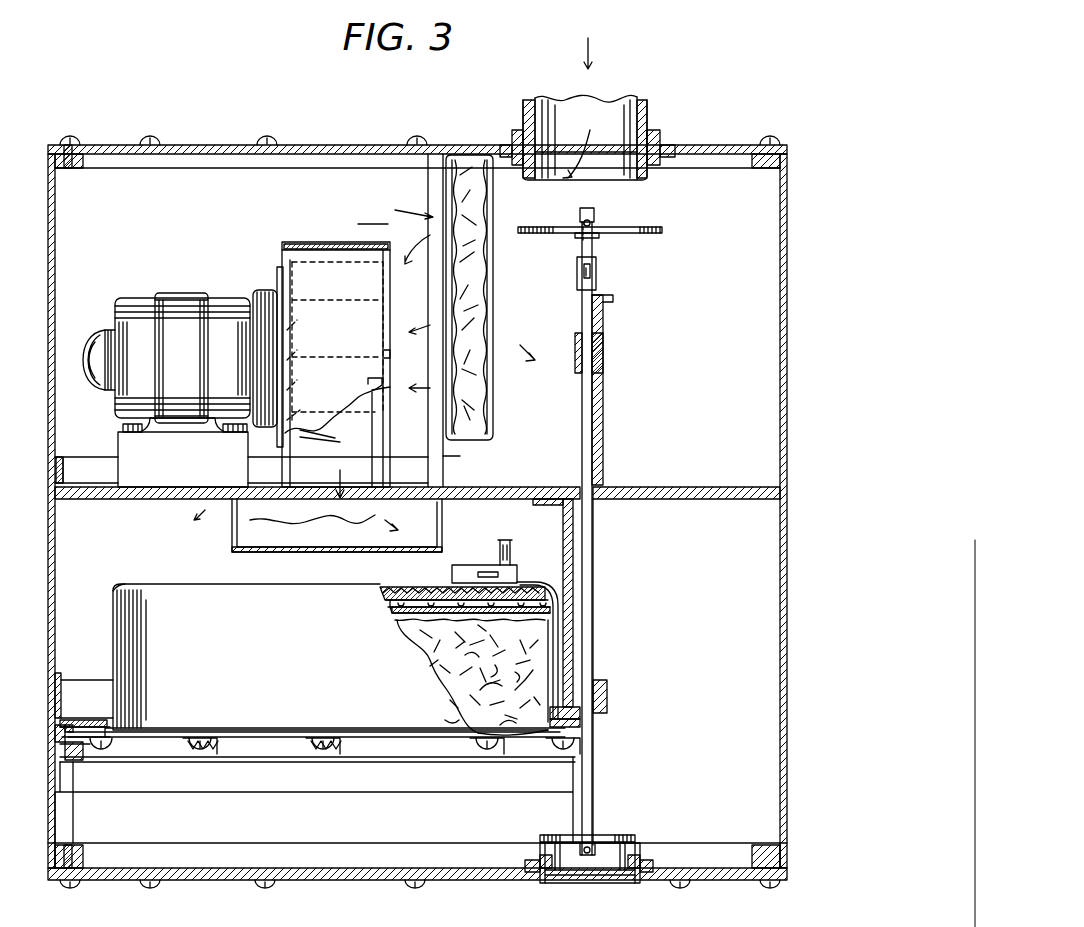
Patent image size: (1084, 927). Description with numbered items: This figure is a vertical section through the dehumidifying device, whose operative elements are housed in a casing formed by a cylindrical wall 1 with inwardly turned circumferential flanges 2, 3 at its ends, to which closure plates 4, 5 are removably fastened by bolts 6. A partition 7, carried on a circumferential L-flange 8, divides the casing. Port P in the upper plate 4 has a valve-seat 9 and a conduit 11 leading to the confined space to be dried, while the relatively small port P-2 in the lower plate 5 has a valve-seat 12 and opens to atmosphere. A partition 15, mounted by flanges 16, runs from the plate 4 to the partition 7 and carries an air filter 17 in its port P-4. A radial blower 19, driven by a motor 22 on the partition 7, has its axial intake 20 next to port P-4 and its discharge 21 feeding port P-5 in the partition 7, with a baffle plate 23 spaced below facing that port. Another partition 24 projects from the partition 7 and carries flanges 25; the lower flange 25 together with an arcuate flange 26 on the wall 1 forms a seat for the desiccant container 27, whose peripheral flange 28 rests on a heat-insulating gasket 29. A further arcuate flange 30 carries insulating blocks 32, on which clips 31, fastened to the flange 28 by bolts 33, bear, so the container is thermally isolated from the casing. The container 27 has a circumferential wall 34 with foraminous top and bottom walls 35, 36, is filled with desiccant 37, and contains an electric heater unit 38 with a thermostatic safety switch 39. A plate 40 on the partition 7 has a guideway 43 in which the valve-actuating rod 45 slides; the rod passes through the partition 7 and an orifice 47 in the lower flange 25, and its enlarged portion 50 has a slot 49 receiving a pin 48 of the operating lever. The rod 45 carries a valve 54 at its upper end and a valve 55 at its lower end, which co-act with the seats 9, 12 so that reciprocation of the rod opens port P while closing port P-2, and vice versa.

The cylindrical wall 1 is at (48, 290).
The circumferential flange 2 is at (73, 152).
The circumferential flange 3 is at (80, 880).
The closure plate 4 is at (198, 150).
The closure plate 5 is at (352, 880).
The bolts 6 is at (268, 884).
The partition 7 is at (144, 499).
The circumferential L-flange 8 is at (70, 458).
The valve-seat 9 is at (650, 183).
The conduit 11 is at (523, 112).
The valve-seat 12 is at (648, 845).
The partition 15 is at (452, 468).
The flanges 16 is at (428, 158).
The air filter 17 is at (488, 323).
The radial blower 19 is at (330, 243).
The axial intake 20 is at (390, 400).
The discharge 21 is at (361, 476).
The motor 22 is at (180, 300).
The baffle plate 23 is at (344, 552).
The partition 24 is at (563, 540).
The flanges 25 is at (547, 506).
The arcuate flange 26 is at (60, 692).
The desiccant container 27 is at (172, 584).
The peripheral flange 28 is at (272, 728).
The gasket 29 is at (108, 724).
The arcuate flange 30 is at (314, 800).
The clips 31 is at (115, 741).
The blocks 32 is at (335, 751).
The bolts 33 is at (305, 749).
The circumferential wall 34 is at (222, 607).
The foraminous top wall 35 is at (392, 594).
The foraminous bottom wall 36 is at (570, 735).
The desiccant 37 is at (530, 660).
The electric heater unit 38 is at (555, 604).
The thermostatic safety switch 39 is at (470, 572).
The plate 40 is at (603, 404).
The guideway 43 is at (575, 348).
The valve-actuating rod 45 is at (582, 421).
The orifices 47 is at (602, 694).
The pins 48 is at (596, 280).
The slots 49 is at (596, 268).
The enlarged portion 50 is at (577, 275).
The valve 54 is at (662, 231).
The valve 55 is at (617, 835).